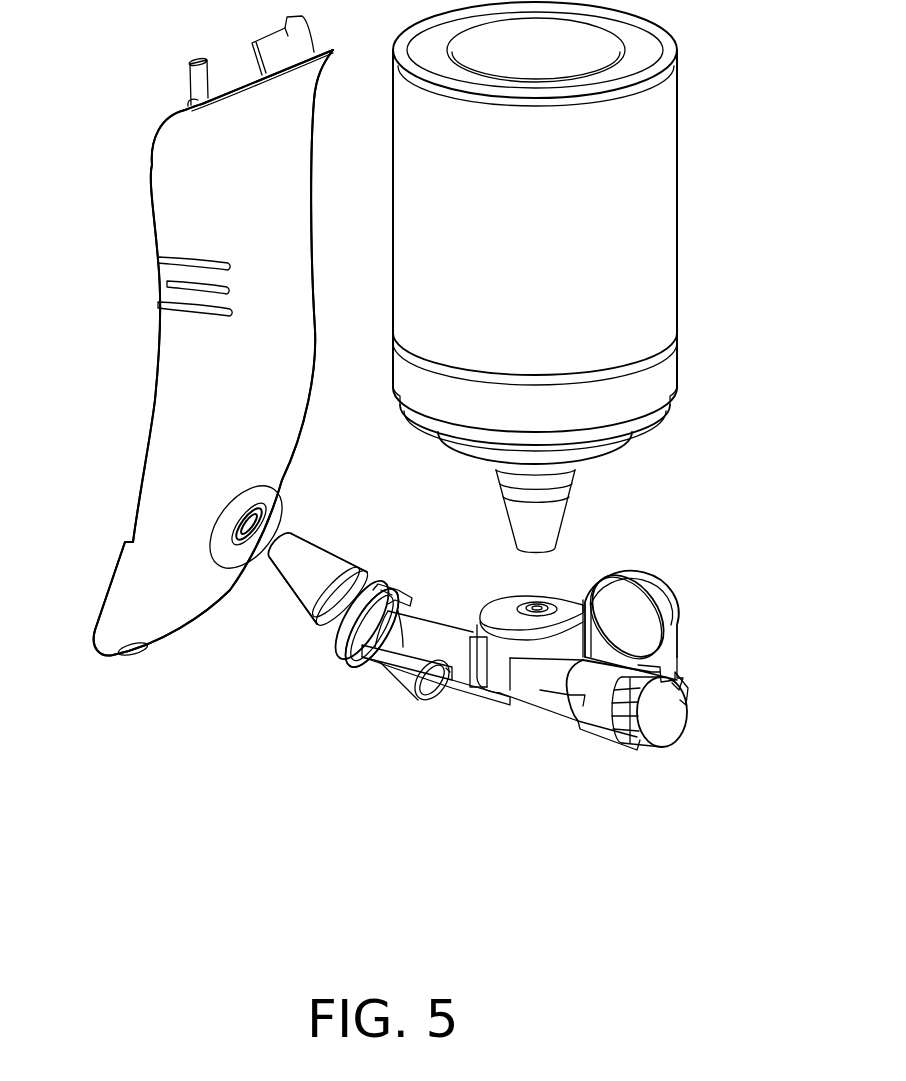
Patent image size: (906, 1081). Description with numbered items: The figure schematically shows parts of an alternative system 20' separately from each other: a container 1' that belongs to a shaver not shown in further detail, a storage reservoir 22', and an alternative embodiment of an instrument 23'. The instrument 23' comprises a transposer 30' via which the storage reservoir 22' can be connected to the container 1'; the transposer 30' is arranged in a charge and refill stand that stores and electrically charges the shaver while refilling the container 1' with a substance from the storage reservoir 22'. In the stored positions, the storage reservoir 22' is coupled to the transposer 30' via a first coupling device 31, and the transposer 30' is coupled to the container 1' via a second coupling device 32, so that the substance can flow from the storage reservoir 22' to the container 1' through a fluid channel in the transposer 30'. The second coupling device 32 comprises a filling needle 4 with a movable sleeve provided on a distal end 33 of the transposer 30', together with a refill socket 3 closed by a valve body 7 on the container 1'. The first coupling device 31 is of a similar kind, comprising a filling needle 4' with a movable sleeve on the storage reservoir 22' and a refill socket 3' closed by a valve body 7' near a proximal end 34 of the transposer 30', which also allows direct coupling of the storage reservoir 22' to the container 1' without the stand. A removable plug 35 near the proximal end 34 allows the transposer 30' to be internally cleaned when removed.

The container 1' is at (207, 336).
The system 20' is at (189, 418).
The refill socket 3 is at (242, 524).
The valve body 7 is at (249, 571).
The storage reservoir 22' is at (572, 233).
The filling needle 4' is at (559, 511).
The instrument 23' is at (546, 594).
The second coupling device 32 is at (292, 509).
The filling needle 4 is at (320, 565).
The distal end 33 is at (340, 652).
The pump body 30' is at (436, 618).
The refill socket 3' is at (519, 600).
The valve body 7' is at (512, 565).
The first coupling device 31 is at (552, 583).
The proximal end 34 is at (537, 680).
The removable plug 35 is at (663, 717).